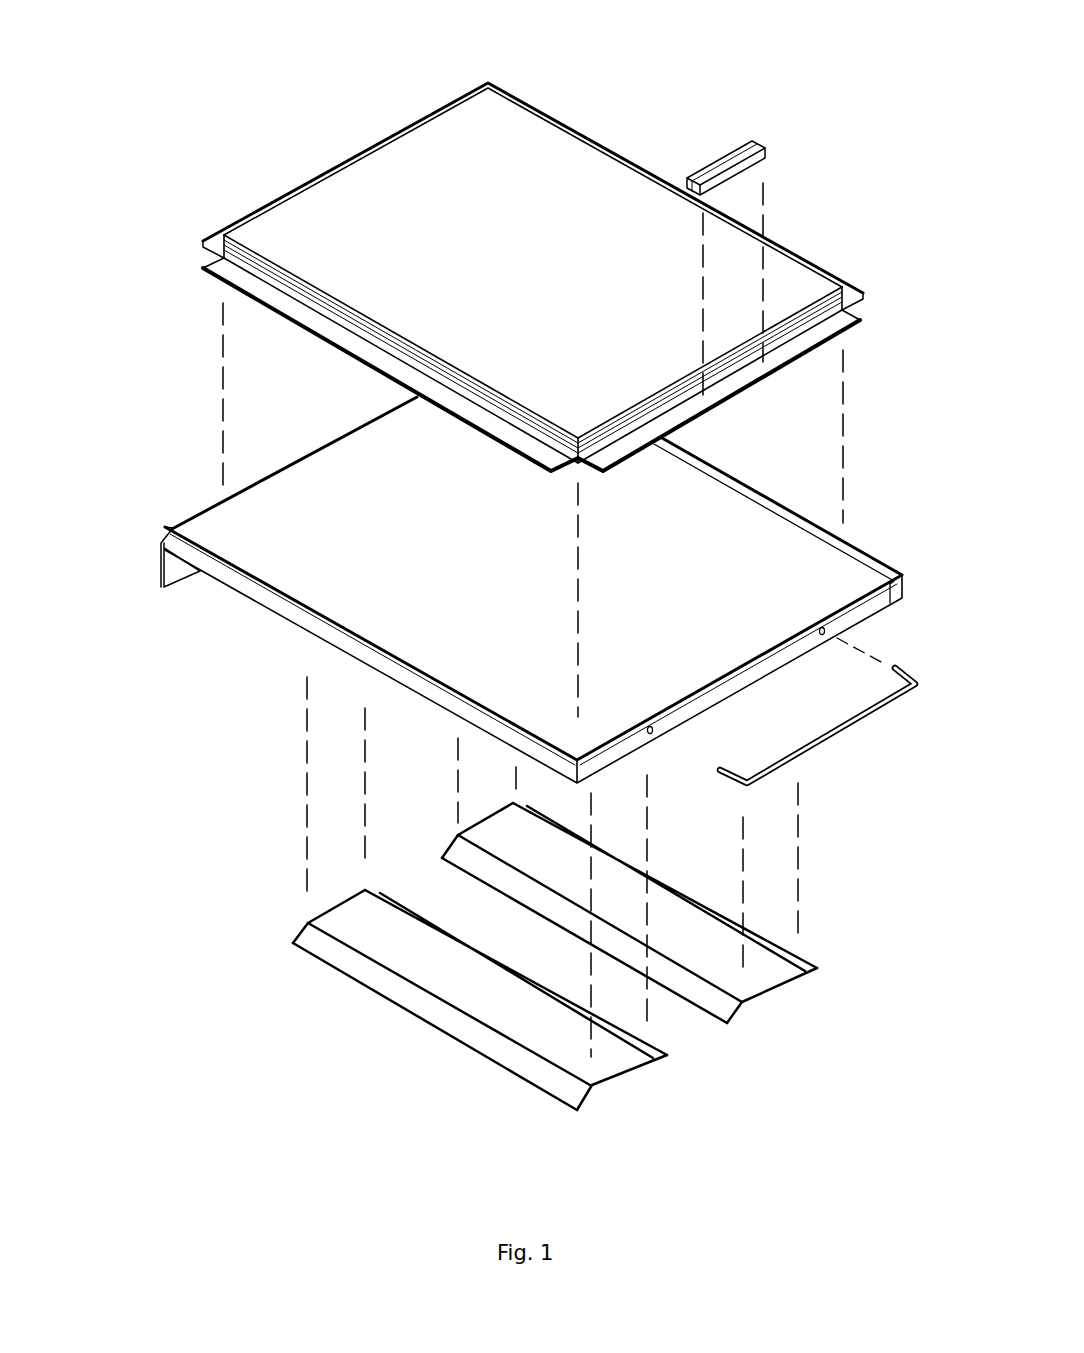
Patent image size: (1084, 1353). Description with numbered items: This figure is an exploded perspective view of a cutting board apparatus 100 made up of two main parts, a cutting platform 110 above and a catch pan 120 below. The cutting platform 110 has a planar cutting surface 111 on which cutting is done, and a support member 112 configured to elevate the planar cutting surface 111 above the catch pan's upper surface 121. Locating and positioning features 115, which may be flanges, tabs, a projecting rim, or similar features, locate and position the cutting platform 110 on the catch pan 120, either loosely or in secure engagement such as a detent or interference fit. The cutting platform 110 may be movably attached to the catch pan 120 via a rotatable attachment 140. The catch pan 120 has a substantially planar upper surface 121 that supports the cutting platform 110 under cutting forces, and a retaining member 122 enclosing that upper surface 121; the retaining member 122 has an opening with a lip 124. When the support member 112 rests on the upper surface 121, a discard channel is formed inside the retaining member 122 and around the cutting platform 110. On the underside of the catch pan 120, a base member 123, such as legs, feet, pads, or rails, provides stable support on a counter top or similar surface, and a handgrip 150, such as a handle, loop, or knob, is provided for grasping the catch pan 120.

The cutting board apparatus 100 is at (175, 58).
The cutting platform 110 is at (605, 76).
The planar cutting surface 111 is at (506, 245).
The support member 112 is at (843, 292).
The locating and positioning features 115 is at (222, 272).
The rotatable attachment 140 is at (767, 147).
The catch pan 120 is at (865, 470).
The planar upper surface 121 is at (506, 558).
The retaining member 122 is at (870, 550).
The lip 124 is at (178, 587).
The handgrip 150 is at (848, 730).
The base member 123 is at (770, 988).